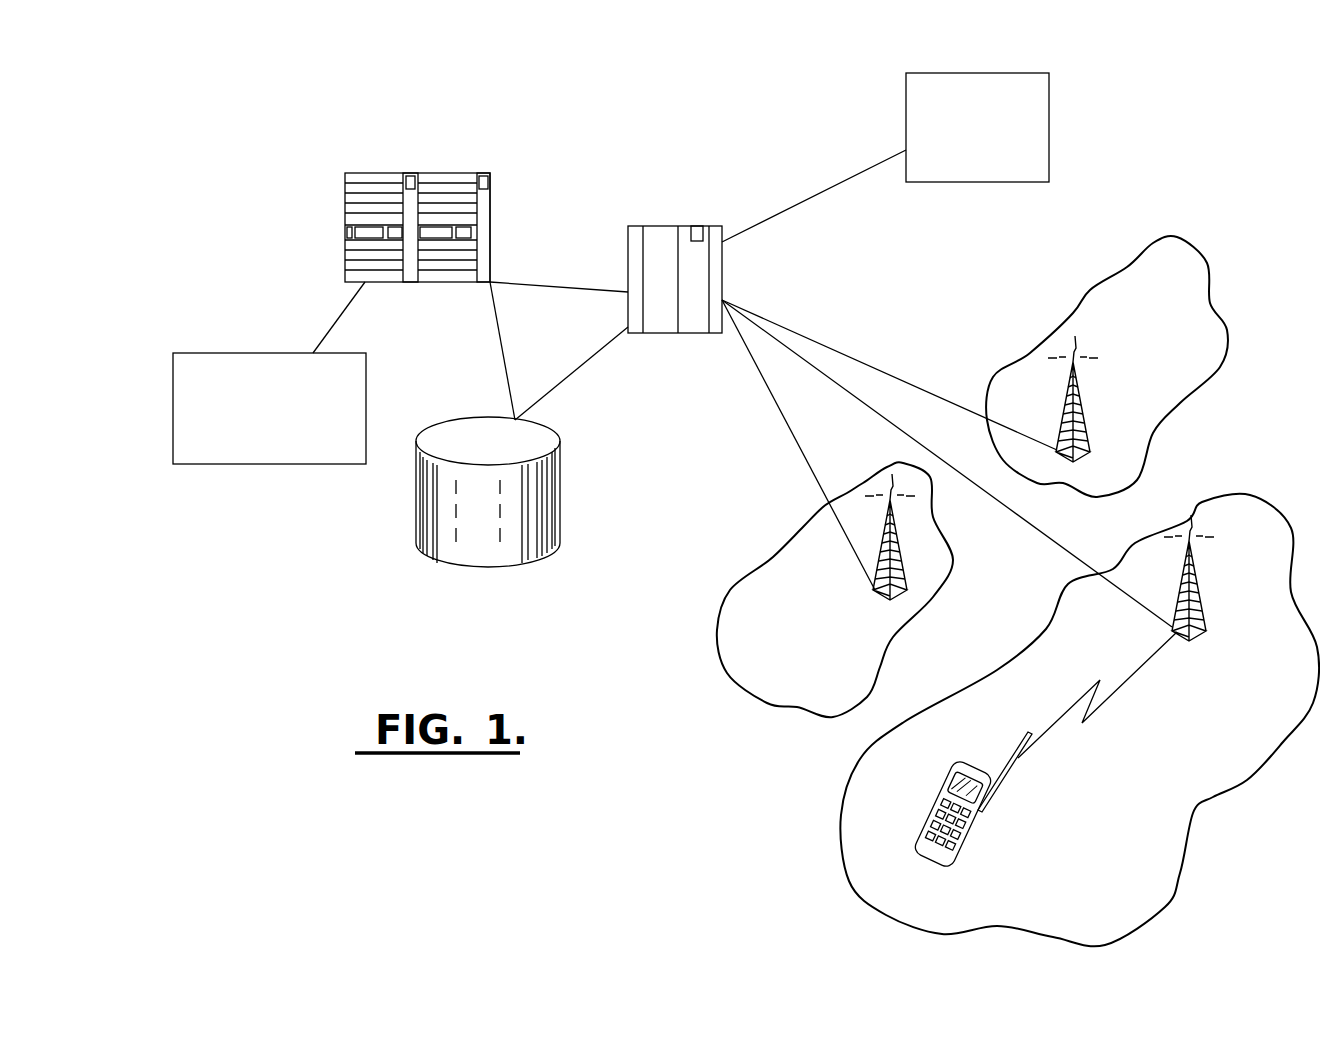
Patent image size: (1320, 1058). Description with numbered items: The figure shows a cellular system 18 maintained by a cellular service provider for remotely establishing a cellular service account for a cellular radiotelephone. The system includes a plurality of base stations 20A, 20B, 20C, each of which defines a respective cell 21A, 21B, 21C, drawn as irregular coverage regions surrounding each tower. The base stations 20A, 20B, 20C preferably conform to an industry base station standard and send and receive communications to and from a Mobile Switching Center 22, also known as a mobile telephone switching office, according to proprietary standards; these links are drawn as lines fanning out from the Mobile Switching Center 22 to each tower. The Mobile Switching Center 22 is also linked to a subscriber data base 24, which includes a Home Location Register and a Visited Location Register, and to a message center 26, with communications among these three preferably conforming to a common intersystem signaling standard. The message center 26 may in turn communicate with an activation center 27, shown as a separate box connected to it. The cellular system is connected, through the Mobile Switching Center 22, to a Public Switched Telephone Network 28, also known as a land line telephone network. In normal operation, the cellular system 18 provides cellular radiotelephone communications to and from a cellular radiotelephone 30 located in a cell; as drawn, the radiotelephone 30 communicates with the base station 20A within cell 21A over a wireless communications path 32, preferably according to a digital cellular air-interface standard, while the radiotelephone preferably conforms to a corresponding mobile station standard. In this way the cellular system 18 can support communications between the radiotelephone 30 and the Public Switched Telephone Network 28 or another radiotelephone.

The cellular system 18 is at (1216, 94).
The base station 20A is at (1205, 604).
The base station 20B is at (1086, 424).
The base station 20C is at (885, 600).
The cell 21A is at (1283, 742).
The cell 21B is at (1208, 265).
The cell 21C is at (722, 658).
The Mobile Switching Center 22 is at (693, 226).
The subscriber data base 24 is at (440, 562).
The message center 26 is at (345, 256).
The activation center 27 is at (230, 353).
The Public Switched Telephone Network 28 is at (1049, 90).
The cellular radiotelephone 30 is at (977, 822).
The wireless communications path 32 is at (1135, 681).